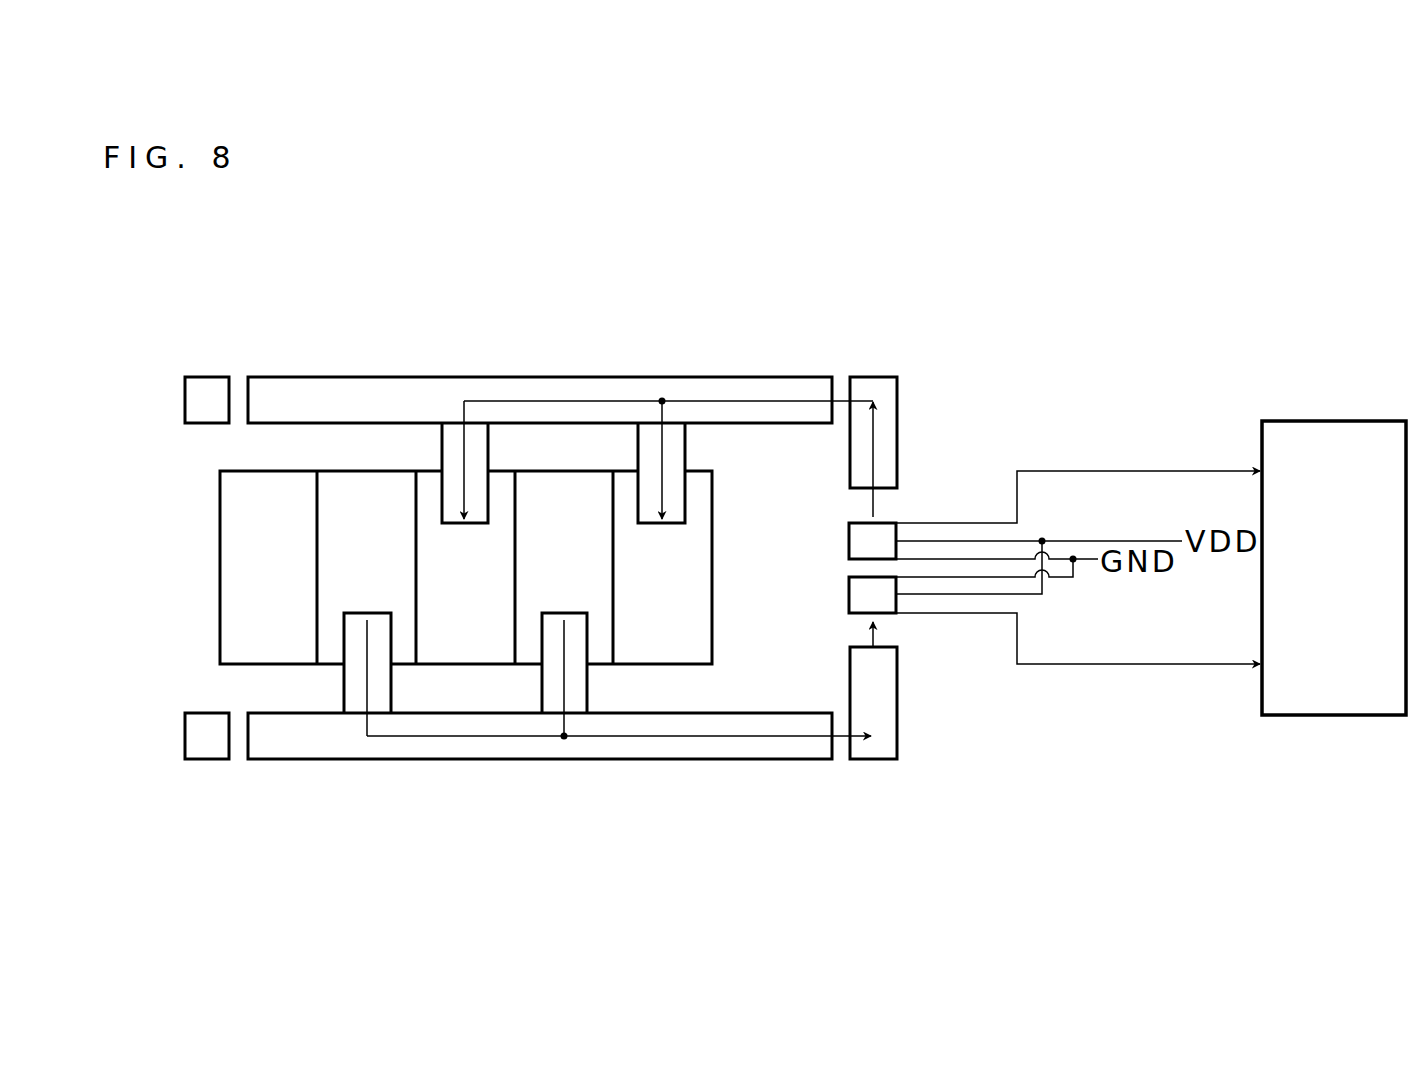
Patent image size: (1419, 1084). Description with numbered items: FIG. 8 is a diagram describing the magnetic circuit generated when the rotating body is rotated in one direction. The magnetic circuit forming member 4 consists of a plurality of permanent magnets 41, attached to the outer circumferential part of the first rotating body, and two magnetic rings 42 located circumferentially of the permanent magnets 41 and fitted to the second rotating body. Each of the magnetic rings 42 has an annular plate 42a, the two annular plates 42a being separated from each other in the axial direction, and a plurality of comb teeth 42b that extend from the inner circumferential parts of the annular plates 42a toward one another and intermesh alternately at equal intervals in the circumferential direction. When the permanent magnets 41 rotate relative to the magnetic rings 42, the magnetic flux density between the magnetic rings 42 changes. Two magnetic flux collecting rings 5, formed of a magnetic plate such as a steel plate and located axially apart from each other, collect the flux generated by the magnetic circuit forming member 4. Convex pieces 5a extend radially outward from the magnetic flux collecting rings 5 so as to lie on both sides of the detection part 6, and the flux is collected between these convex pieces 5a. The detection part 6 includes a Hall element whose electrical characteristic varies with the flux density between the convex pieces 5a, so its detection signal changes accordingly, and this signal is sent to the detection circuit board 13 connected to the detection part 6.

The magnetic circuit forming member 4 is at (326, 330).
The permanent magnets 41 is at (221, 537).
The magnetic rings 42 is at (421, 376).
The annular plates 42a is at (671, 377).
The comb teeth 42b is at (442, 448).
The magnetic flux collecting rings 5 is at (208, 377).
The convex pieces 5a is at (897, 412).
The detection part 6 is at (880, 523).
The detection circuit board 13 is at (1323, 421).